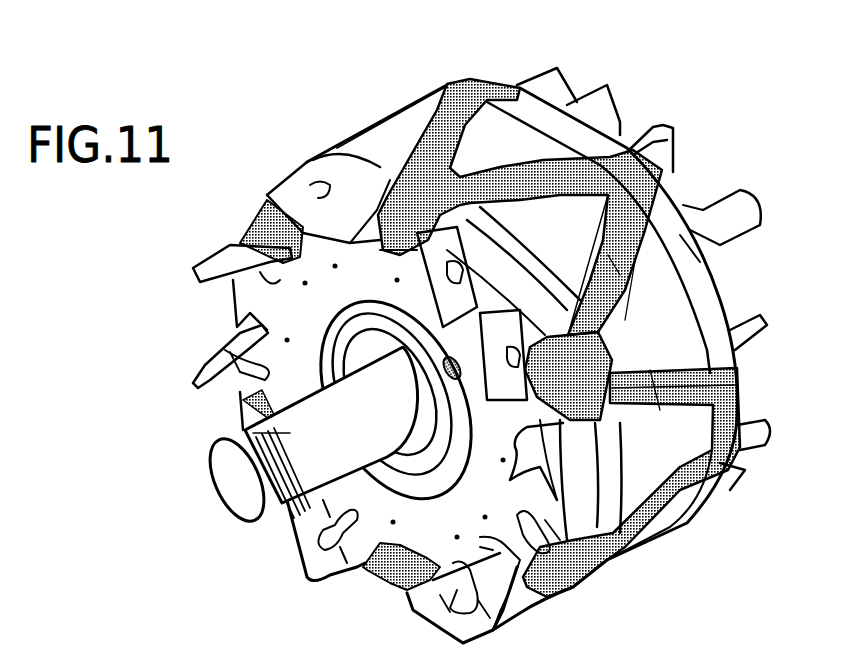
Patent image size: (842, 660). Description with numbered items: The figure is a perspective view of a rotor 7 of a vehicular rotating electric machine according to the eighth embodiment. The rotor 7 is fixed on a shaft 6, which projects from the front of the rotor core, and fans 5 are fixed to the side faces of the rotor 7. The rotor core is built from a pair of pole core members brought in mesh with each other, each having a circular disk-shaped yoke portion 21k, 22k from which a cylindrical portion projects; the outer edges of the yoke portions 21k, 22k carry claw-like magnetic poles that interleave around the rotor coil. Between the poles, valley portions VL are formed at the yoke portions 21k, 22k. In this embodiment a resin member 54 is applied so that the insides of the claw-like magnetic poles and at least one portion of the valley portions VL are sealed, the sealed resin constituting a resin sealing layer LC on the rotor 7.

The fan 5 is at (217, 347).
The shaft 6 is at (248, 424).
The rotor 7 is at (690, 323).
The resin member 54 is at (535, 180).
The yoke portion 21k is at (597, 290).
The yoke portion 22k is at (679, 368).
The resin sealing layer LC is at (608, 255).
The valley portions VL is at (640, 270).